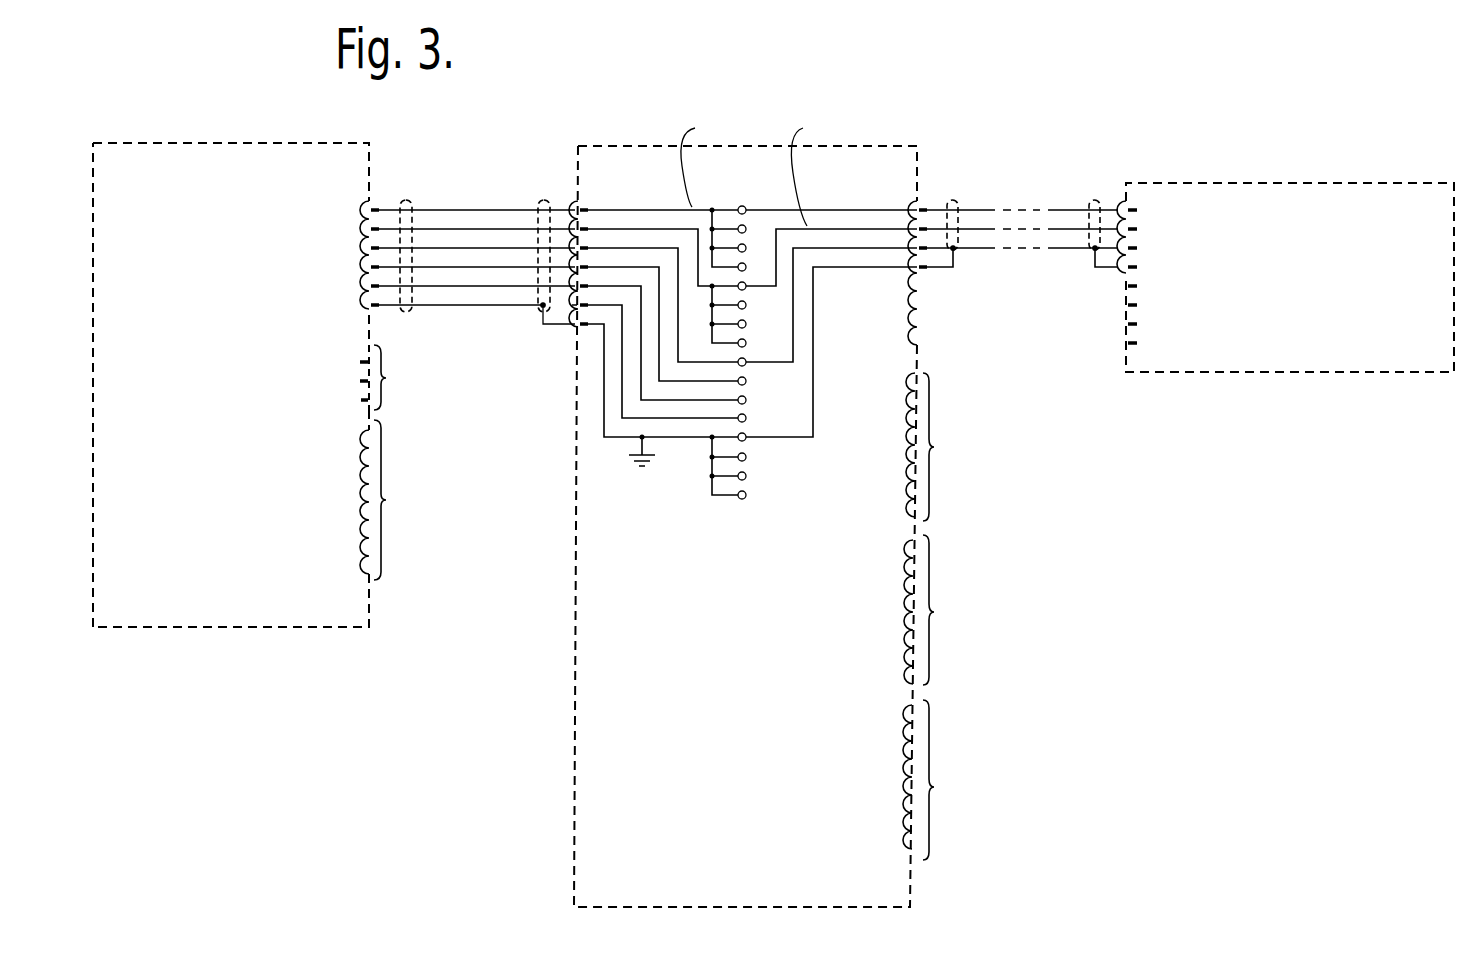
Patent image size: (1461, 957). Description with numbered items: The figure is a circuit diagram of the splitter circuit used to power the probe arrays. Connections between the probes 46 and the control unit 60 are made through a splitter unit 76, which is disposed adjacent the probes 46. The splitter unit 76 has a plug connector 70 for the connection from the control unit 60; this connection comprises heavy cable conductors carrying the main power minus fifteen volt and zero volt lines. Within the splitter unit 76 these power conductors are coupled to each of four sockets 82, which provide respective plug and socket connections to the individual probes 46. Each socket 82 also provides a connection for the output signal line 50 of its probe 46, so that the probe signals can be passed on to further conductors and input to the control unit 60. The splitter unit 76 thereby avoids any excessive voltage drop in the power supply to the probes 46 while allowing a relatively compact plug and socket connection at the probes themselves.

The control unit 60 is at (208, 381).
The plug connector 70 is at (518, 183).
The splitter unit 76 is at (735, 617).
The sockets 82 is at (918, 312).
The output signal line 50 is at (1053, 250).
The probe 46 is at (1307, 288).